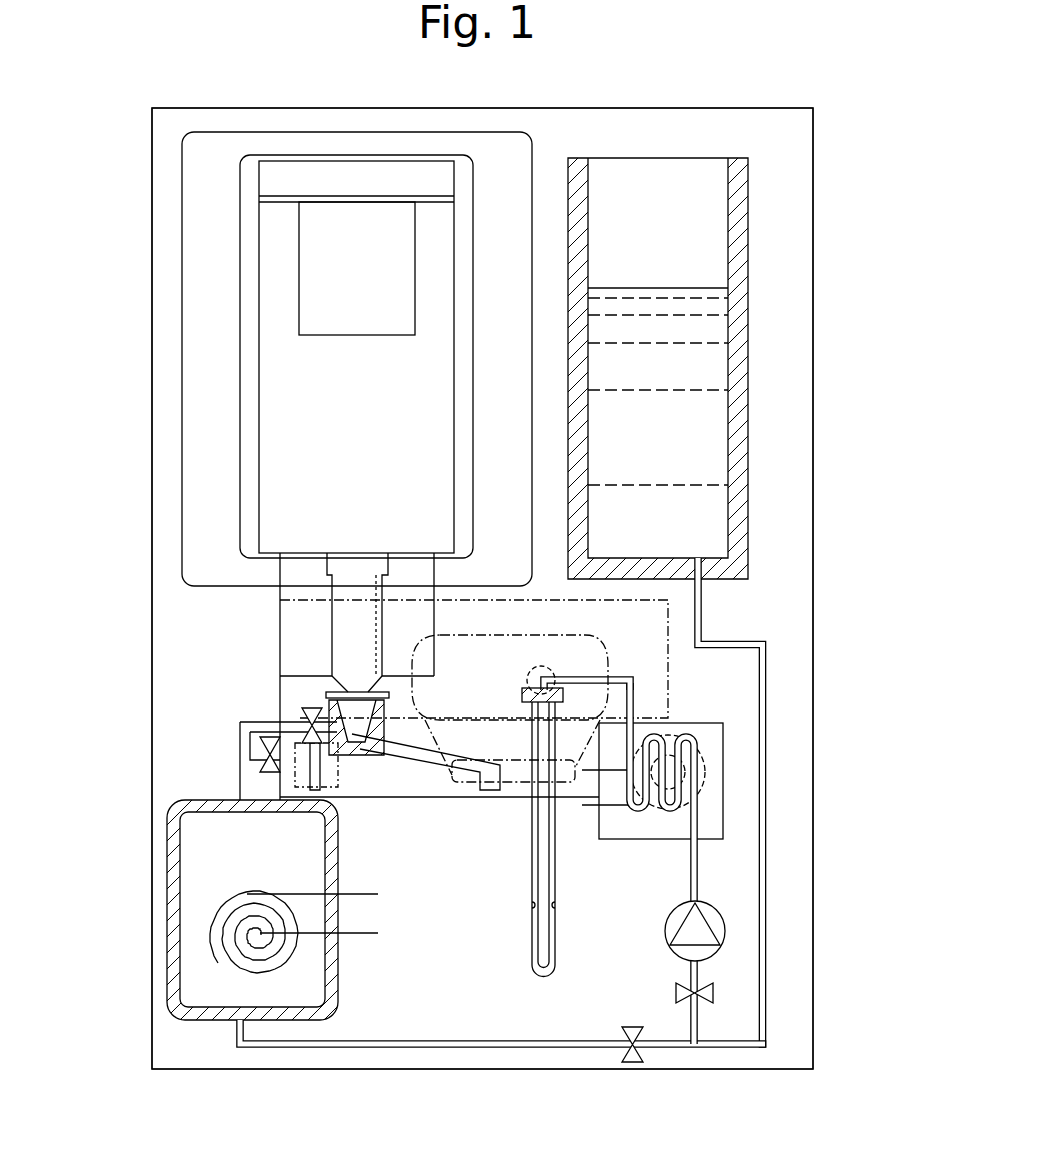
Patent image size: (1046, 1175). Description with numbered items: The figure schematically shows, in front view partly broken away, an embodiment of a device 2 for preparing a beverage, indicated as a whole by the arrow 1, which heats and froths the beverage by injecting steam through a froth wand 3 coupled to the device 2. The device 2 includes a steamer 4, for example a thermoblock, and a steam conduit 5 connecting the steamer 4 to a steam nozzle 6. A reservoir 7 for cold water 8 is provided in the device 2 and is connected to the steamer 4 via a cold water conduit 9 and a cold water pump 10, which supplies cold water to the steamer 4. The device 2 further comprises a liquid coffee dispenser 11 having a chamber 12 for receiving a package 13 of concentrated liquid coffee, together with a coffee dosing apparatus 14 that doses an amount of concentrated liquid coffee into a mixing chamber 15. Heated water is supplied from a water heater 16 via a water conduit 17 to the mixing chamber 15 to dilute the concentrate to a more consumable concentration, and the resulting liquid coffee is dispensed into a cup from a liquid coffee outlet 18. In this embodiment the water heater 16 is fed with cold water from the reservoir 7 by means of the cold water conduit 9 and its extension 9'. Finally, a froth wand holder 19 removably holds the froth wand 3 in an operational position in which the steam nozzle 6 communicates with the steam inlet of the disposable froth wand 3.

The coffee machine 1 is at (870, 322).
The device 2 is at (160, 585).
The froth wand 3 is at (535, 945).
The steamer 4 is at (716, 745).
The steam conduit 5 is at (632, 690).
The steam nozzle 6 is at (530, 685).
The reservoir 7 is at (738, 203).
The cold water 8 is at (687, 428).
The cold water conduit 9 is at (789, 803).
The extension 9' is at (503, 1075).
The cold water pump 10 is at (718, 922).
The liquid coffee dispenser 11 is at (245, 433).
The chamber 12 is at (200, 252).
The package 13 is at (300, 170).
The coffee dosing apparatus 14 is at (296, 630).
The mixing chamber 15 is at (353, 750).
The water heater 16 is at (205, 870).
The water conduit 17 is at (245, 730).
The liquid coffee outlet 18 is at (488, 790).
The froth wand holder 19 is at (520, 690).